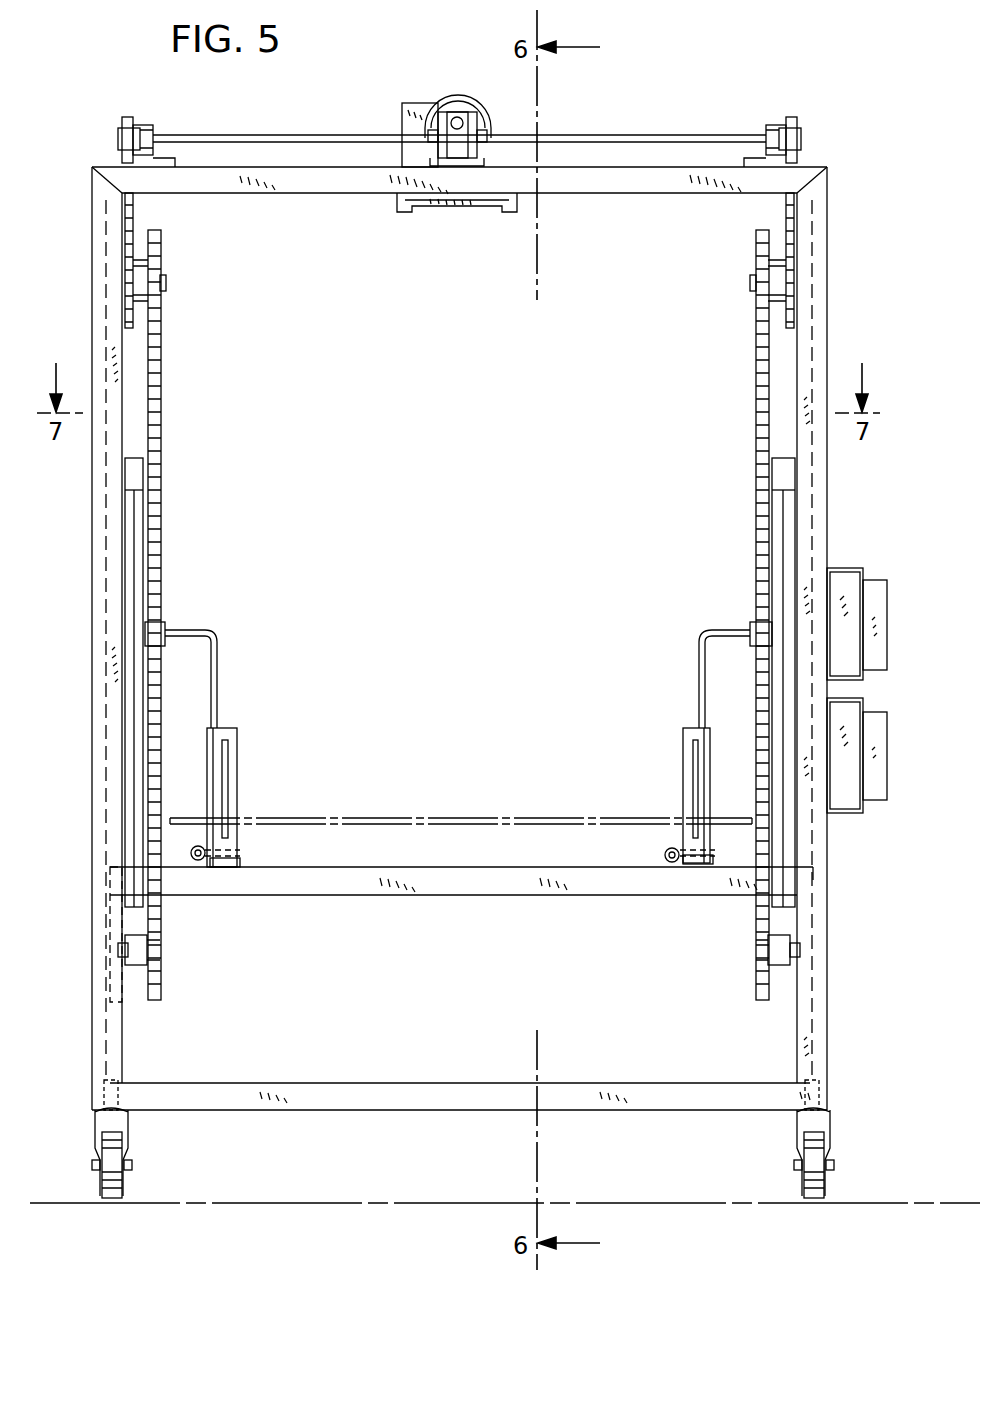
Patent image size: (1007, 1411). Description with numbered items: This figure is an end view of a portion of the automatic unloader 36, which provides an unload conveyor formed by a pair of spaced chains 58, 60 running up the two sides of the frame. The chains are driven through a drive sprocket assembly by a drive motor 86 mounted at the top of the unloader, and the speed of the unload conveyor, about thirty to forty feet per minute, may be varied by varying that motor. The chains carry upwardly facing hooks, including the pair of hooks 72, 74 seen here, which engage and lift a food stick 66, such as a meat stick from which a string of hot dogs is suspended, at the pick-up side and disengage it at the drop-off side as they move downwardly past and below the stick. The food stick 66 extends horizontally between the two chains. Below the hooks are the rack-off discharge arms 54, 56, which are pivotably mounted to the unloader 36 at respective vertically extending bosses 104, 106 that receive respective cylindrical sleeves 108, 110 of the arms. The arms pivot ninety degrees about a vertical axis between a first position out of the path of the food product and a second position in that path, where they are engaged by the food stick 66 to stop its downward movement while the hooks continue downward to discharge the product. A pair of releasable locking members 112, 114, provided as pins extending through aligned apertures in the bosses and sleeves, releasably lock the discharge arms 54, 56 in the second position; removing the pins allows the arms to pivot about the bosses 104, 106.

The automatic unloader 36 is at (92, 183).
The drive motor 86 is at (448, 96).
The chain 60 is at (160, 395).
The chain 58 is at (757, 395).
The hook 74 is at (222, 700).
The hook 72 is at (698, 672).
The discharge arm 56 is at (230, 773).
The discharge arm 54 is at (697, 762).
The cylindrical sleeve 110 is at (238, 810).
The cylindrical sleeve 108 is at (682, 795).
The releasable locking member 114 is at (198, 845).
The releasable locking member 112 is at (665, 852).
The vertically extending boss 106 is at (227, 865).
The vertically extending boss 104 is at (710, 867).
The food stick 66 is at (432, 817).